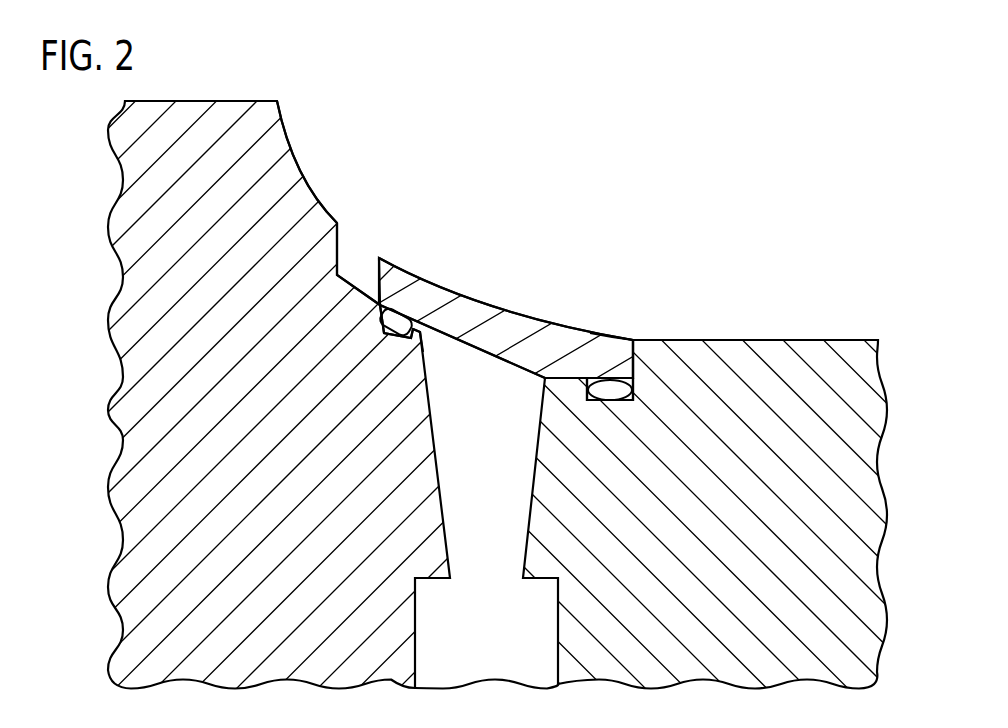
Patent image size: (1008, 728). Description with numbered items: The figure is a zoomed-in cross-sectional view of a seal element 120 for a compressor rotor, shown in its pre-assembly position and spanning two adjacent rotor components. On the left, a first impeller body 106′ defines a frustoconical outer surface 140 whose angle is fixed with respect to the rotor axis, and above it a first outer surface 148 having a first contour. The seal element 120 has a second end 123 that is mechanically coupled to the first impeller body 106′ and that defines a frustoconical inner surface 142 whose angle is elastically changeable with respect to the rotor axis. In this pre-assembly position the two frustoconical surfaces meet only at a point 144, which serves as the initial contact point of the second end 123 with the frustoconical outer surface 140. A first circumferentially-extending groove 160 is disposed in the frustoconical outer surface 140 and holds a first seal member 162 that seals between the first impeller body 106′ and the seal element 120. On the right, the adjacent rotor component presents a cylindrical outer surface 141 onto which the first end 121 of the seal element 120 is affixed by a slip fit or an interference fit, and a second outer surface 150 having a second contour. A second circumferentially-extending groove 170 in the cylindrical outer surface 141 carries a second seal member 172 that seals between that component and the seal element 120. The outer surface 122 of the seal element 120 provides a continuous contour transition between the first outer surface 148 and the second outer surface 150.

The first impeller body 106′ is at (224, 113).
The first outer surface 148 is at (293, 162).
The frustoconical outer surface 140 is at (345, 278).
The frustoconical inner surface 142 is at (430, 333).
The first circumferentially-extending groove 160 is at (385, 322).
The first seal member 162 is at (392, 318).
The seal element 120 is at (527, 330).
The outer surface 122 is at (484, 304).
The point 144 is at (383, 301).
The second end 123 is at (394, 249).
The cylindrical outer surface 141 is at (568, 377).
The first end 121 is at (616, 323).
The second outer surface 150 is at (665, 338).
The second circumferentially-extending groove 170 is at (612, 402).
The second seal member 172 is at (620, 390).